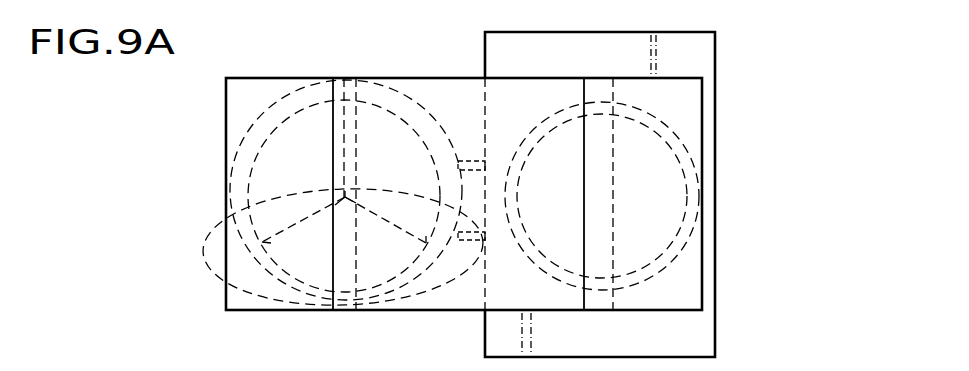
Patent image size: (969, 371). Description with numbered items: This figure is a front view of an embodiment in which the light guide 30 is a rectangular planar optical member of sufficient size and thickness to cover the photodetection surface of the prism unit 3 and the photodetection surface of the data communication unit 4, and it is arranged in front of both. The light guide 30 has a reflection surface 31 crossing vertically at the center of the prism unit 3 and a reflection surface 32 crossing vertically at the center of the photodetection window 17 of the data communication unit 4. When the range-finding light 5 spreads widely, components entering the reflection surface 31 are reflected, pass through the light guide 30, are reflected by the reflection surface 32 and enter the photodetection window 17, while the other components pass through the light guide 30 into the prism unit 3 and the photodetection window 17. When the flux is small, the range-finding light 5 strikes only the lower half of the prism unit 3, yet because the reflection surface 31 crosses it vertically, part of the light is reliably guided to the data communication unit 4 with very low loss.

The prism unit 3 is at (365, 312).
The data communication unit 4 is at (719, 288).
The range-finding light 5 is at (215, 228).
The photodetection window 17 is at (660, 176).
The light guide 30 is at (431, 312).
The reflection surface 31 is at (333, 78).
The reflection surface 32 is at (595, 305).